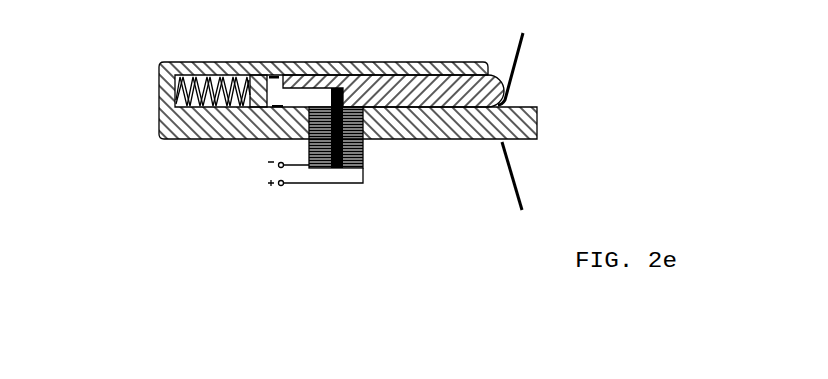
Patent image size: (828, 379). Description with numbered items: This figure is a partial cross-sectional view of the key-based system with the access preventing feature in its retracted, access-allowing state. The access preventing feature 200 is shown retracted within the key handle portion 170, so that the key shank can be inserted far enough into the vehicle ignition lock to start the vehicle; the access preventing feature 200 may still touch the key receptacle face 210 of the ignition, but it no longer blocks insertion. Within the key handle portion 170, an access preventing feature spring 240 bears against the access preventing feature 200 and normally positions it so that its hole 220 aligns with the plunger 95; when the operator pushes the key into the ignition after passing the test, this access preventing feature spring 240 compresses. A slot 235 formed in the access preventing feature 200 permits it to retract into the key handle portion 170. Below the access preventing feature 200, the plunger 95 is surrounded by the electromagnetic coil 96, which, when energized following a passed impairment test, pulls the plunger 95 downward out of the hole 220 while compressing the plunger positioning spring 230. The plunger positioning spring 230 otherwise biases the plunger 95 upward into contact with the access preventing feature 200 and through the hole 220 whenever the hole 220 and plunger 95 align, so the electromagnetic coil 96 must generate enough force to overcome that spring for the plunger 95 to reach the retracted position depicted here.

The key handle portion 170 is at (230, 118).
The access preventing feature spring 240 is at (207, 93).
The hole 220 is at (273, 81).
The access preventing feature 200 is at (468, 85).
The slot 235 is at (299, 98).
The plunger positioning spring 230 is at (347, 168).
The plunger 95 is at (364, 144).
The electromagnetic coil 96 is at (312, 168).
The key receptacle face 210 is at (520, 71).